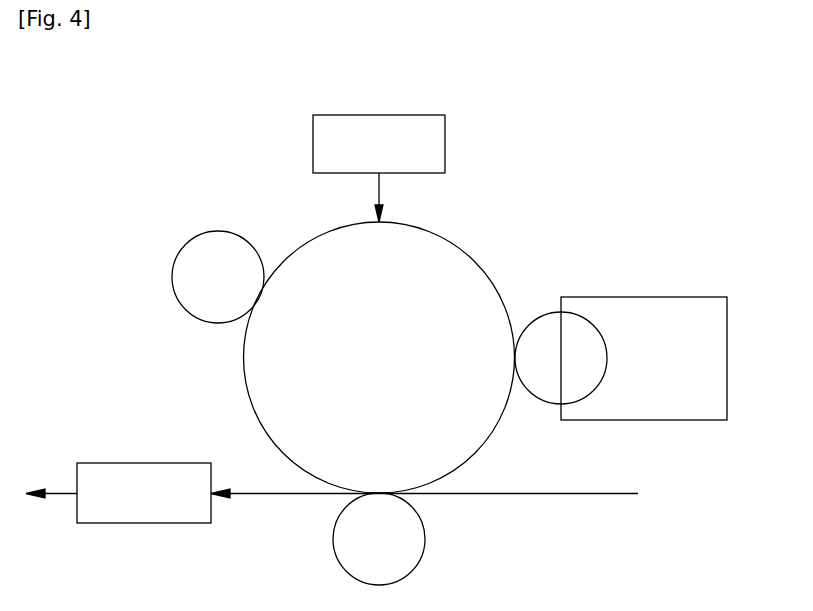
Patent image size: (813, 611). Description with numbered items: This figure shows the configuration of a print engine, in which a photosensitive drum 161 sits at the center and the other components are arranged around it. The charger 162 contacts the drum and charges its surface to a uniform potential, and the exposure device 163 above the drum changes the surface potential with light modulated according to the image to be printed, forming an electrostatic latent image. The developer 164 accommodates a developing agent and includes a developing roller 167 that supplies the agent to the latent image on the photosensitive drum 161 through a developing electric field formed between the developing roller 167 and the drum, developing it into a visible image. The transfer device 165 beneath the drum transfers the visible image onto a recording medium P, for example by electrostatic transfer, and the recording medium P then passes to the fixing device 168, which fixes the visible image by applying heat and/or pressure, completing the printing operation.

The photosensitive drum 161 is at (445, 238).
The charger 162 is at (216, 231).
The exposure device 163 is at (379, 113).
The developer 164 is at (642, 297).
The transfer device 165 is at (427, 535).
The developing roller 167 is at (532, 319).
The fixing device 168 is at (143, 463).
The recording medium P is at (253, 497).